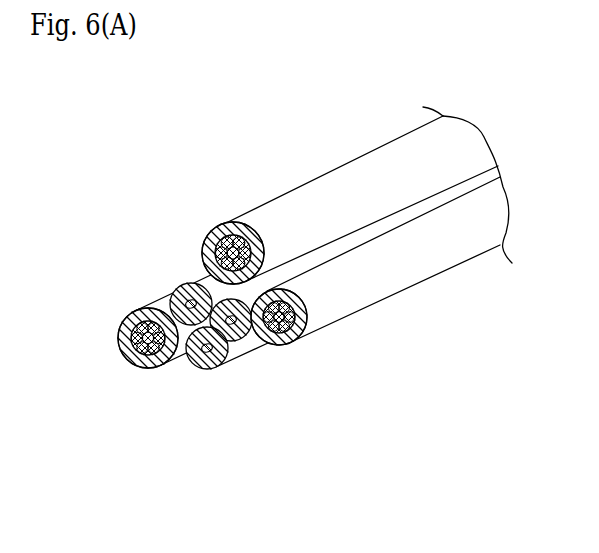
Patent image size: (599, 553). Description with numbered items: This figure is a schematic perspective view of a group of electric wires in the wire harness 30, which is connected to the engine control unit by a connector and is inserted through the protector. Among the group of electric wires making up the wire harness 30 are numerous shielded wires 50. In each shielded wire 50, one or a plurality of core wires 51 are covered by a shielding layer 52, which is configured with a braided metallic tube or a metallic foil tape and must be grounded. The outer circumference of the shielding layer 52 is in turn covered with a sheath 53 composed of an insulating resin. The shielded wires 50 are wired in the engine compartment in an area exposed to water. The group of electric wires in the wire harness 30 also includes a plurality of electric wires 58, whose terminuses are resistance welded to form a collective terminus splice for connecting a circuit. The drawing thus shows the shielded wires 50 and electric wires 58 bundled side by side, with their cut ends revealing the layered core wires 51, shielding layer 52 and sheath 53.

The wire harness 30 is at (208, 382).
The shielded wire 50 is at (123, 347).
The core wire 51 is at (215, 251).
The shielding layer 52 is at (229, 222).
The sheath 53 is at (263, 229).
The electric wire 58 is at (257, 360).